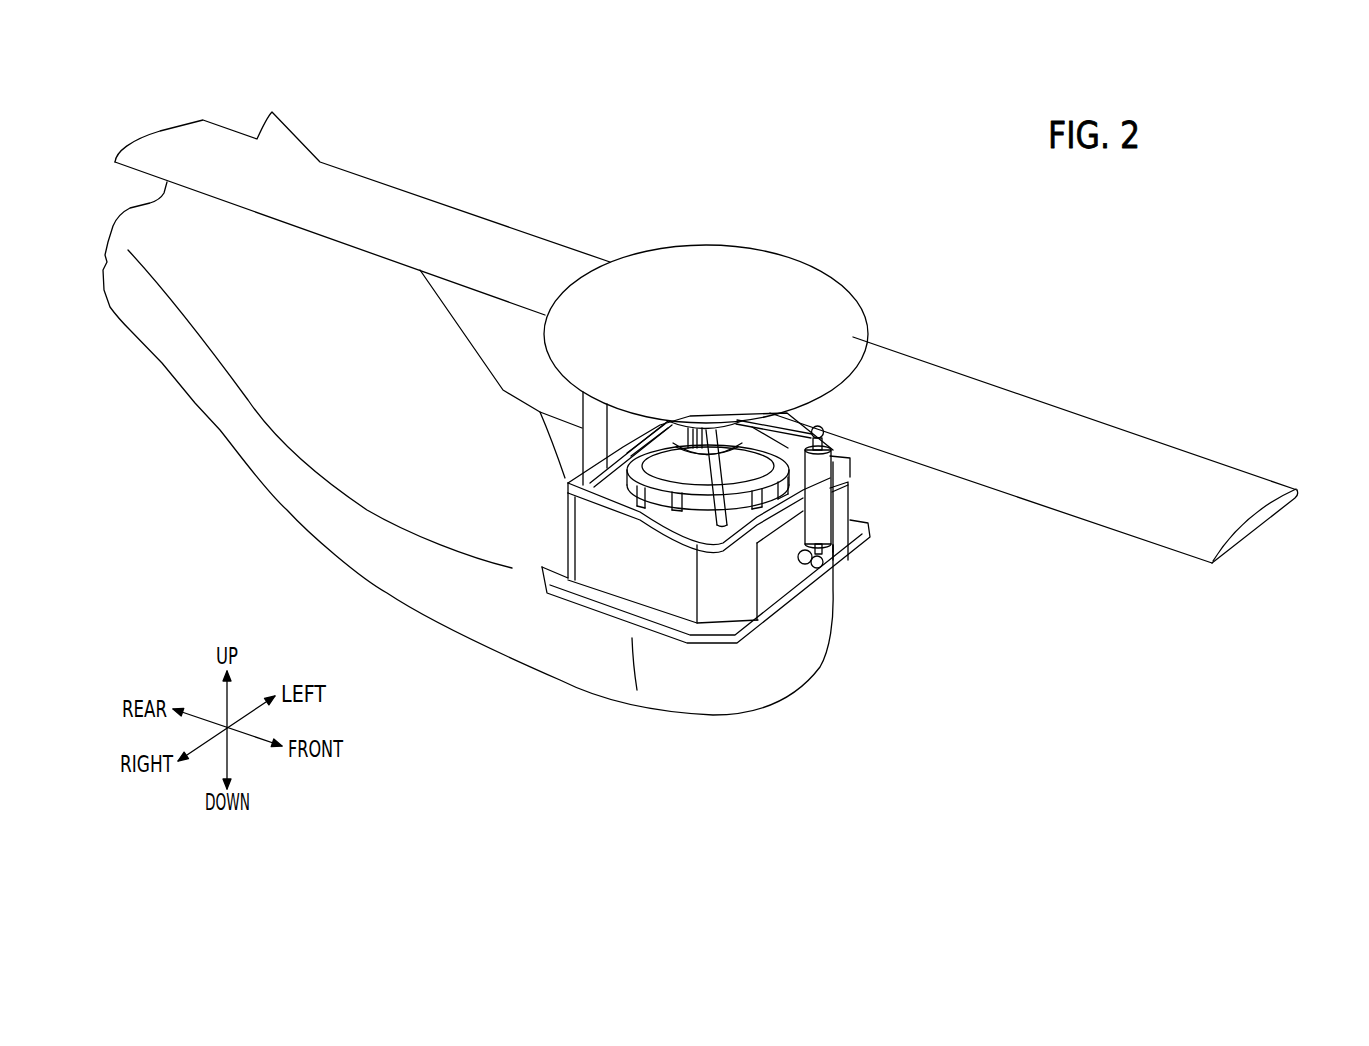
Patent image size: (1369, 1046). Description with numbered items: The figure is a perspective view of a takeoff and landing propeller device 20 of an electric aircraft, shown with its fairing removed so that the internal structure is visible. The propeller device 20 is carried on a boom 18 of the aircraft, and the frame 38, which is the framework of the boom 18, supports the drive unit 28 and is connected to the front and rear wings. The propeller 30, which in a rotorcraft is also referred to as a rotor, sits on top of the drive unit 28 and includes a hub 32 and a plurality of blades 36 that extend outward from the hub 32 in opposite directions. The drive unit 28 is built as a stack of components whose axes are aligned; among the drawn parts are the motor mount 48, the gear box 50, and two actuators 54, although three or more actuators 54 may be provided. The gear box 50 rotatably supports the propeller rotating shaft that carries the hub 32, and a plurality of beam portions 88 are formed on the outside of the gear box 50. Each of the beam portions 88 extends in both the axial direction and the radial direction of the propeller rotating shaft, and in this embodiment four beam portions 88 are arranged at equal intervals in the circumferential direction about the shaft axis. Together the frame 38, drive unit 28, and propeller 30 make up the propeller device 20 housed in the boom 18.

The boom 18 is at (175, 400).
The propeller device 20 is at (1123, 215).
The drive unit 28 is at (872, 508).
The propeller 30 is at (880, 286).
The hub 32 is at (780, 268).
The blades 36 is at (461, 222).
The frame 38 is at (790, 668).
The motor mount 48 is at (615, 568).
The gear box 50 is at (663, 470).
The actuators 54 is at (582, 406).
The beam portions 88 is at (665, 442).